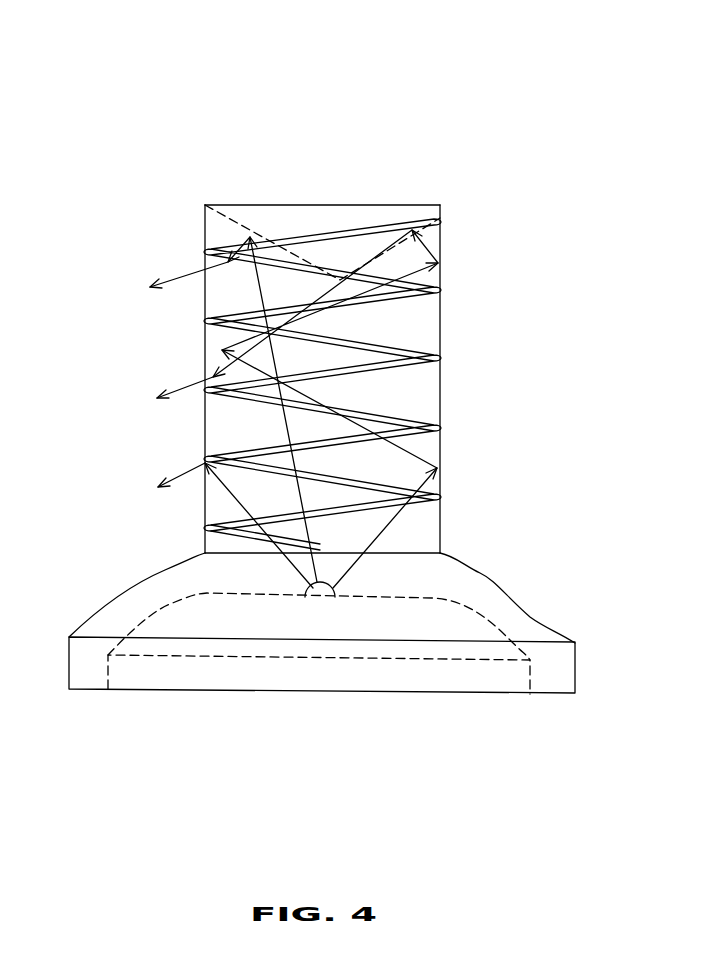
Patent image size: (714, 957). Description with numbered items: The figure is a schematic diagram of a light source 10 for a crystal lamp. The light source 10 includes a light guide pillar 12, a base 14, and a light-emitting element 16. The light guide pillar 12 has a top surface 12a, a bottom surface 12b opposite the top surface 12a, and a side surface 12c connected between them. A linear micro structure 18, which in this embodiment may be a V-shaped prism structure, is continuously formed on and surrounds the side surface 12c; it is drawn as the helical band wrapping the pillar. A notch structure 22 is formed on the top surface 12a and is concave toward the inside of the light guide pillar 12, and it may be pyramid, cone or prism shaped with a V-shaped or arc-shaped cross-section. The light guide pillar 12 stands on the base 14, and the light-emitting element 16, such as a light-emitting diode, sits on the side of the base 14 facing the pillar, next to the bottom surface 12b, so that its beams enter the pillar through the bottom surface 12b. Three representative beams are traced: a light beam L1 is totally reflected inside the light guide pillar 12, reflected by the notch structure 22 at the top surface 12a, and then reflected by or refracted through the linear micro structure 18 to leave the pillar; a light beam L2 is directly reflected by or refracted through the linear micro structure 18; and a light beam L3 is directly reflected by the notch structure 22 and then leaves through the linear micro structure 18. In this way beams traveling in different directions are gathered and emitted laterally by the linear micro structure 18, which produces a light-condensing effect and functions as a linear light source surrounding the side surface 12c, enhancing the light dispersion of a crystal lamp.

The light source 10 is at (52, 43).
The light guide pillar 12 is at (351, 344).
The top surface 12a is at (222, 210).
The bottom surface 12b is at (390, 552).
The side surface 12c is at (440, 405).
The base 14 is at (130, 588).
The light-emitting element 16 is at (334, 590).
The linear micro structure 18 is at (440, 277).
The notch structure 22 is at (316, 240).
The light beam L1 is at (280, 409).
The light beam L2 is at (216, 525).
The light beam L3 is at (233, 409).